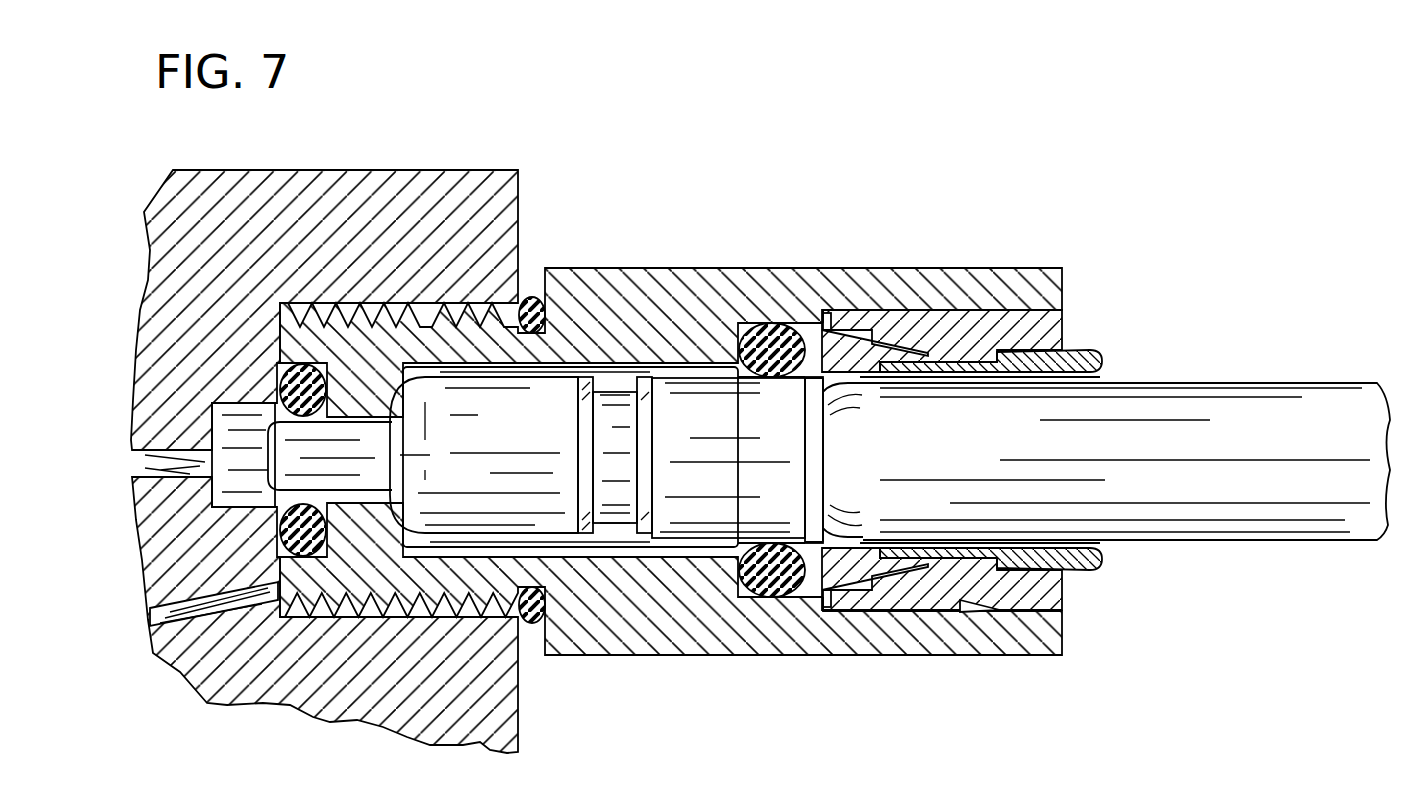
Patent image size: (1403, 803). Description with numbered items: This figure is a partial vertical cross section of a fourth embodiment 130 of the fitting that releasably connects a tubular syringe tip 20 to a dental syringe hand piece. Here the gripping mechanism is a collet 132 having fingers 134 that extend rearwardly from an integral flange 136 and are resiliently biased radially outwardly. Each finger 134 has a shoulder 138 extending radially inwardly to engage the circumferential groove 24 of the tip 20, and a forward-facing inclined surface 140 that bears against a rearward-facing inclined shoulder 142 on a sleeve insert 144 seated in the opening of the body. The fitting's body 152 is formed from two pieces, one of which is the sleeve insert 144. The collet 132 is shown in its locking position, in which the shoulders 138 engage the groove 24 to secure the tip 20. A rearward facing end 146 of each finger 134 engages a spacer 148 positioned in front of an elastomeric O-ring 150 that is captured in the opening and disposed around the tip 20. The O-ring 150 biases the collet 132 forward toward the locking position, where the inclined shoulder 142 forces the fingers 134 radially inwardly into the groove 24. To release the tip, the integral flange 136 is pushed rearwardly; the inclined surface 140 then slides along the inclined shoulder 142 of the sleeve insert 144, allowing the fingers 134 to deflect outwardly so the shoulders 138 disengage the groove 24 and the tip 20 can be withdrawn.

The syringe tip 20 is at (1247, 383).
The circumferential groove 24 is at (815, 478).
The fourth embodiment 130 is at (707, 441).
The collet 132 is at (998, 614).
The fingers 134 is at (1002, 304).
The integral flange 136 is at (1100, 350).
The shoulder 138 is at (836, 400).
The inclined surface 140 is at (858, 314).
The inclined shoulder 142 is at (884, 357).
The sleeve insert 144 is at (1037, 312).
The rearward facing end 146 is at (780, 376).
The spacer 148 is at (810, 325).
The O-ring 150 is at (765, 322).
The body 152 is at (868, 665).